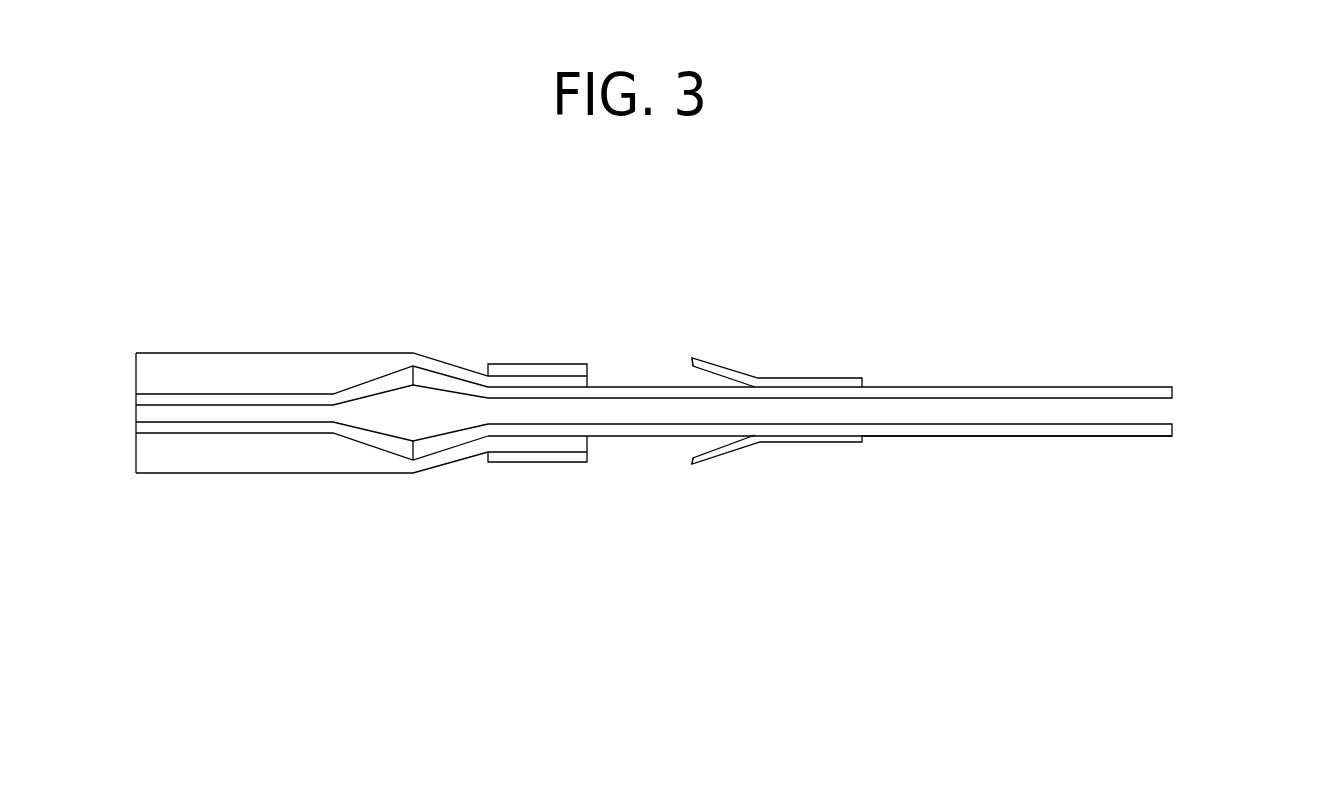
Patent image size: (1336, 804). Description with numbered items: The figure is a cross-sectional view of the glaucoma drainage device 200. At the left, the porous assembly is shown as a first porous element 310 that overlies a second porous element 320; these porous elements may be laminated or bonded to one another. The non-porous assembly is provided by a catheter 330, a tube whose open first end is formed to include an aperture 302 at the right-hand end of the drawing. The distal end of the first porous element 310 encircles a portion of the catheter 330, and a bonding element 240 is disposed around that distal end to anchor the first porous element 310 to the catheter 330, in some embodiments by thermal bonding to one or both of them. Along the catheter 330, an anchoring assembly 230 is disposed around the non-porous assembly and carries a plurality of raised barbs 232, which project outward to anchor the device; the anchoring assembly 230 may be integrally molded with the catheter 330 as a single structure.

The glaucoma drainage device 200 is at (658, 587).
The first porous element 310 is at (237, 374).
The second porous element 320 is at (241, 424).
The aperture 302 is at (1165, 408).
The catheter 330 is at (1038, 436).
The bonding element 240 is at (542, 463).
The anchoring assembly 230 is at (792, 373).
The raised barbs 232 is at (700, 360).